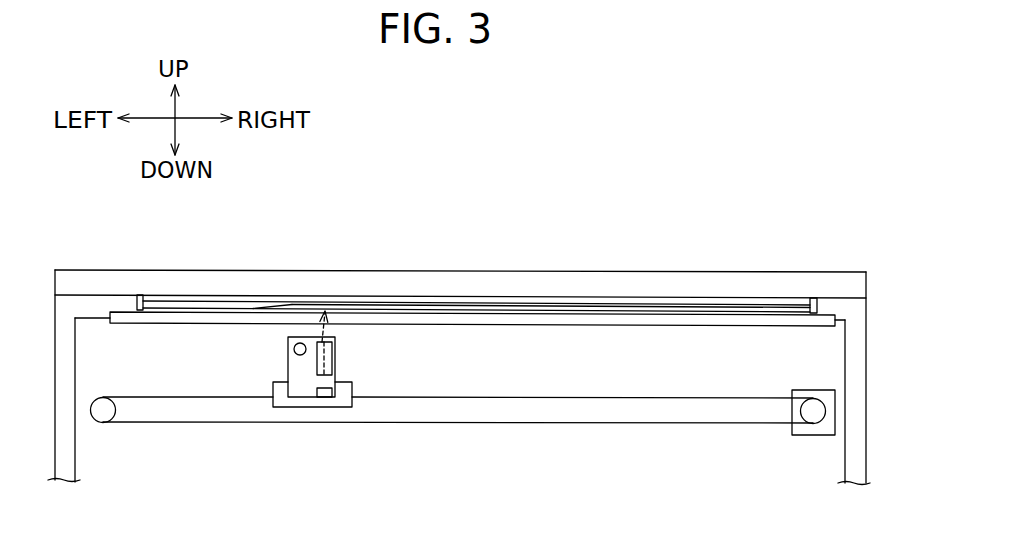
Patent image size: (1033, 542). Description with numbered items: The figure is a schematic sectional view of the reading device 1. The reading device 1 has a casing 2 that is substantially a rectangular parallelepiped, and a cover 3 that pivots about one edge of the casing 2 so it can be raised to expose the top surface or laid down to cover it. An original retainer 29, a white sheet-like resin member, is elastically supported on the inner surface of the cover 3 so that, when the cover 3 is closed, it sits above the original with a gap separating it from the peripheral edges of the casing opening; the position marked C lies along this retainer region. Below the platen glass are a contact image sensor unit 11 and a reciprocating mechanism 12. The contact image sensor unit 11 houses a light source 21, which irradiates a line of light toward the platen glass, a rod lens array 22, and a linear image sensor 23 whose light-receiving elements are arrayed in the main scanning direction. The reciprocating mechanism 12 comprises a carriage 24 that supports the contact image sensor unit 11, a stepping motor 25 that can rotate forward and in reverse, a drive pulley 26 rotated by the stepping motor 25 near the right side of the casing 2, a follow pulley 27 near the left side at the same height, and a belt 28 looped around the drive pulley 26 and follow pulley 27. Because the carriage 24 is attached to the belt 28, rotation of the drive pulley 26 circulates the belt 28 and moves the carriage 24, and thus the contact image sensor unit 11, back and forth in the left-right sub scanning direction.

The reading device 1 is at (100, 242).
The casing 2 is at (867, 395).
The cover 3 is at (620, 283).
The original retainer 29 is at (493, 311).
The center position C is at (185, 313).
The contact image sensor unit 11 is at (337, 370).
The light source 21 is at (293, 351).
The rod lens array 22 is at (337, 351).
The image sensor 23 is at (326, 398).
The carriage 24 is at (277, 407).
The belt 28 is at (513, 423).
The reciprocating mechanism 12 is at (427, 424).
The follow pulley 27 is at (103, 417).
The drive pulley 26 is at (806, 417).
The stepping motor 25 is at (813, 435).